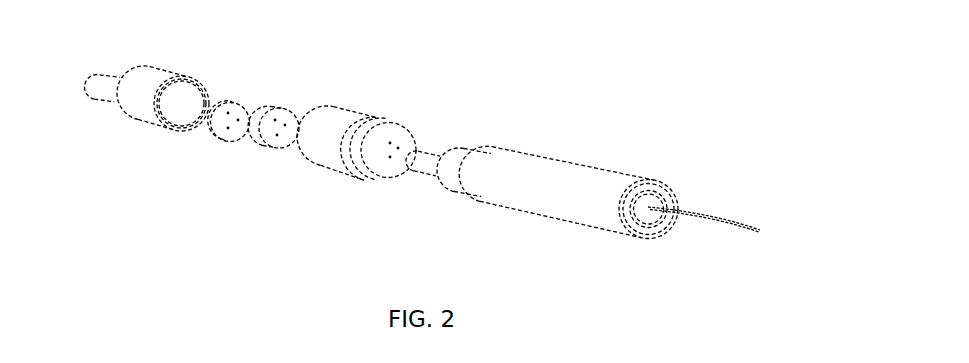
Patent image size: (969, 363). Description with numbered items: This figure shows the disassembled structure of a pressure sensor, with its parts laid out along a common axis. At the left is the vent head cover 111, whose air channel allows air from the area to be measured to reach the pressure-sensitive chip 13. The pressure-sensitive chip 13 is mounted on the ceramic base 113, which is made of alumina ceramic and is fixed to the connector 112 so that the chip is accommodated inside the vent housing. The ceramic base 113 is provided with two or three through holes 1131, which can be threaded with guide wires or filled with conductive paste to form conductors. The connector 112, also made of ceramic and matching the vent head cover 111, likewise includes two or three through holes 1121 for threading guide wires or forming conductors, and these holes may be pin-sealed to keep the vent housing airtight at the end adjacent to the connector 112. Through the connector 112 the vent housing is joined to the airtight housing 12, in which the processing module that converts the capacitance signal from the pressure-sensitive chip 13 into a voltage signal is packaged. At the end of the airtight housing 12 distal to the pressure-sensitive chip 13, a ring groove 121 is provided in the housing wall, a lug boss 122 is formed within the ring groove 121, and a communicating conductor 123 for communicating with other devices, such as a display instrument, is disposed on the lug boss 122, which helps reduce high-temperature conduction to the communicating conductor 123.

The vent head cover 111 is at (148, 128).
The pressure-sensitive chip 13 is at (222, 140).
The ceramic base 113 is at (276, 135).
The through hole 1131 is at (283, 114).
The connector 112 is at (368, 151).
The through hole 1121 is at (390, 142).
The airtight housing 12 is at (598, 166).
The ring groove 121 is at (663, 183).
The lug boss 122 is at (656, 202).
The communicating conductor 123 is at (632, 233).